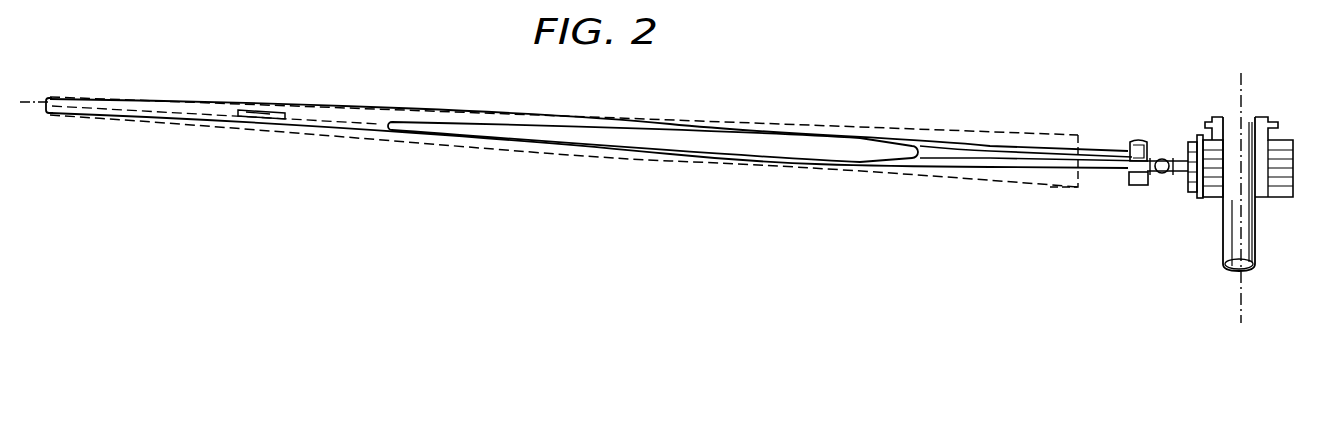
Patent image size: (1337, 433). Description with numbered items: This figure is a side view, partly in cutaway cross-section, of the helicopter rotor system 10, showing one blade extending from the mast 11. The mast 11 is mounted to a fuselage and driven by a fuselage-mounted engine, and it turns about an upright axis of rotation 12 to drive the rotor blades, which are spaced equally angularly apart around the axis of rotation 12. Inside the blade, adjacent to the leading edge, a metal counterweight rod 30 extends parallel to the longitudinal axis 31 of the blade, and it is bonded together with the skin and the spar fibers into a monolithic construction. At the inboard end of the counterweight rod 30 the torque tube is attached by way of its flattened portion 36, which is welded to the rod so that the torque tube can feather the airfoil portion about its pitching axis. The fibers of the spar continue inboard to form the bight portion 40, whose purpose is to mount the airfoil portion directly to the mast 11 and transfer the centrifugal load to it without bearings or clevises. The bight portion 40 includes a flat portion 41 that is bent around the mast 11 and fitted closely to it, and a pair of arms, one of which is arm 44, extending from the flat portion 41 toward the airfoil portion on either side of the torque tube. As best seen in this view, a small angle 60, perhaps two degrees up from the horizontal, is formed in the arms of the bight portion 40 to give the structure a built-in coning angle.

The helicopter rotor system 10 is at (1045, 82).
The mast 11 is at (1257, 232).
The axis of rotation 12 is at (1246, 92).
The counterweight rod 30 is at (186, 100).
The longitudinal axis 31 is at (33, 103).
The flattened portion 36 is at (266, 95).
The bight portion 40 is at (1047, 154).
The flat portion 41 is at (1294, 167).
The arm 44 is at (1068, 160).
The small angle 60 is at (1238, 303).